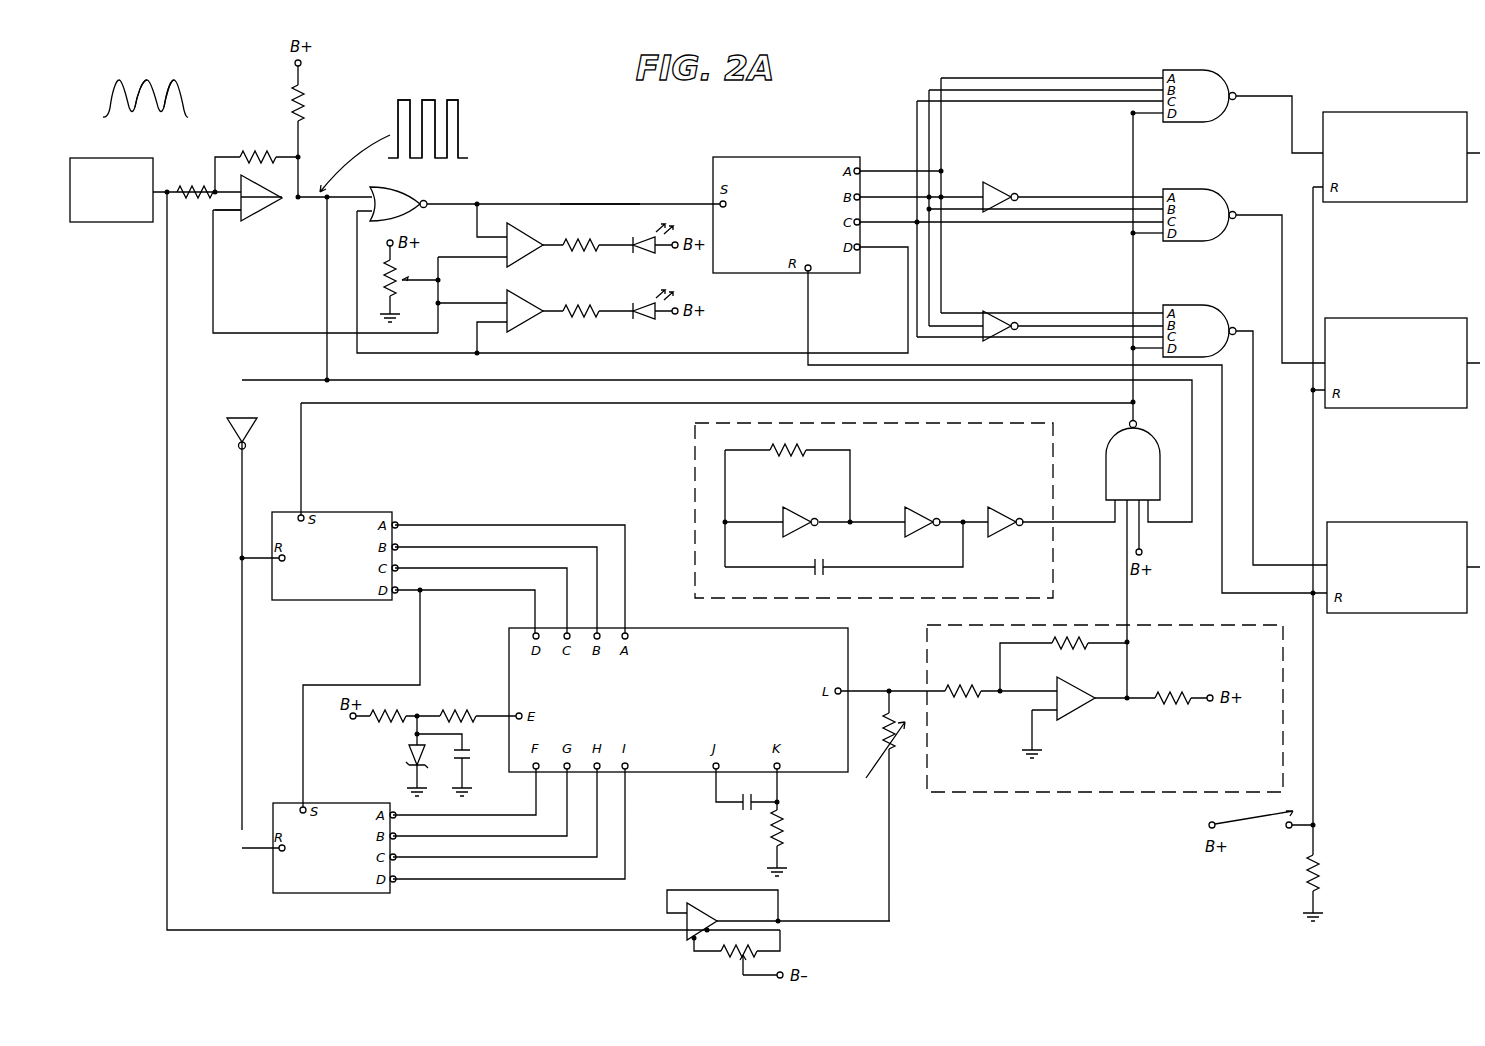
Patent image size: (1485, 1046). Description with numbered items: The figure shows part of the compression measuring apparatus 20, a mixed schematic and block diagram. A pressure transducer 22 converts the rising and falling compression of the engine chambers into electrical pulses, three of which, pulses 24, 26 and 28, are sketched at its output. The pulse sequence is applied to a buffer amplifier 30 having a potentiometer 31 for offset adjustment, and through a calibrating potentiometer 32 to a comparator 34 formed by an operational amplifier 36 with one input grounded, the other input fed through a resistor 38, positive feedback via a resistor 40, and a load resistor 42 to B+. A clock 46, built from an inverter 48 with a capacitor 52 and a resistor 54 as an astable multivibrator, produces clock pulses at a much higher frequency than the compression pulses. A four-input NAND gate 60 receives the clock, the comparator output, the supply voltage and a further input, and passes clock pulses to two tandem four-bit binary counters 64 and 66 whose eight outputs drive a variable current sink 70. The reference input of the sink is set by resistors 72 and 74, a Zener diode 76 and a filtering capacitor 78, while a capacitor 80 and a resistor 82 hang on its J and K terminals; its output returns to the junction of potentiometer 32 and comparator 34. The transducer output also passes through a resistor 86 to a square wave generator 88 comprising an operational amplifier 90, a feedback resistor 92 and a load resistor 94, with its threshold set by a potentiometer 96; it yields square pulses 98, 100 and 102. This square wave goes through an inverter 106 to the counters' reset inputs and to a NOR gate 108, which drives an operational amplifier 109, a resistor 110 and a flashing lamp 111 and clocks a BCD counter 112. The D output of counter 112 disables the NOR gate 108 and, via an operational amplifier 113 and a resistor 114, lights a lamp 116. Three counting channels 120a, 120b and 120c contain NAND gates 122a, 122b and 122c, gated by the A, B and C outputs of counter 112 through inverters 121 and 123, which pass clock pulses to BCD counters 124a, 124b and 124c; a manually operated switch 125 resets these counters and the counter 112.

The compression measuring apparatus 20 is at (623, 166).
The pressure transducer 22 is at (105, 222).
The pulse 24 is at (117, 80).
The pulse 26 is at (147, 80).
The pulse 28 is at (176, 84).
The buffer amplifier 30 is at (676, 948).
The potentiometer 31 is at (738, 960).
The calibrating potentiometer 32 is at (879, 759).
The comparator 34 is at (1075, 793).
The operational amplifier 36 is at (1078, 710).
The resistor 38 is at (964, 700).
The resistor 40 is at (1074, 646).
The load resistor 42 is at (1172, 704).
The clock 46 is at (695, 440).
The inverter 48 is at (804, 515).
The capacitor 52 is at (826, 572).
The resistor 54 is at (782, 458).
The four-input NAND gate 60 is at (1150, 432).
The 4-bit binary counter 64 is at (344, 512).
The 4-bit binary counter 66 is at (280, 803).
The variable current sink 70 is at (668, 775).
The resistor 72 is at (460, 708).
The resistor 74 is at (384, 724).
The Zener diode 76 is at (410, 756).
The filtering capacitor 78 is at (470, 768).
The capacitor 80 is at (745, 810).
The resistor 82 is at (786, 828).
The resistor 86 is at (195, 184).
The square wave generator 88 is at (284, 227).
The operational amplifier 90 is at (257, 215).
The feedback resistor 92 is at (258, 152).
The load resistor 94 is at (306, 104).
The potentiometer 96 is at (400, 268).
The pulse 98 is at (404, 98).
The pulse 100 is at (430, 98).
The pulse 102 is at (455, 98).
The inverter 106 is at (250, 428).
The NOR gate 108 is at (412, 184).
The operational amplifier 109 is at (525, 232).
The resistor 110 is at (582, 240).
The lamp 111 is at (645, 255).
The BCD counter 112 is at (772, 157).
The operational amplifier 113 is at (521, 296).
The resistor 114 is at (578, 318).
The lamp 116 is at (642, 320).
The counting channel 120a is at (1146, 67).
The counting channel 120b is at (1119, 237).
The counting channel 120c is at (1118, 352).
The inverter 121 is at (990, 192).
The four-input NAND gate 122a is at (1192, 123).
The four-input NAND gate 122b is at (1206, 242).
The four-input NAND gate 122c is at (1203, 306).
The inverter 123 is at (988, 320).
The BCD counters 124a is at (1358, 112).
The BCD counters 124b is at (1360, 318).
The BCD counters 124c is at (1360, 522).
The manually operated switch 125 is at (1270, 832).